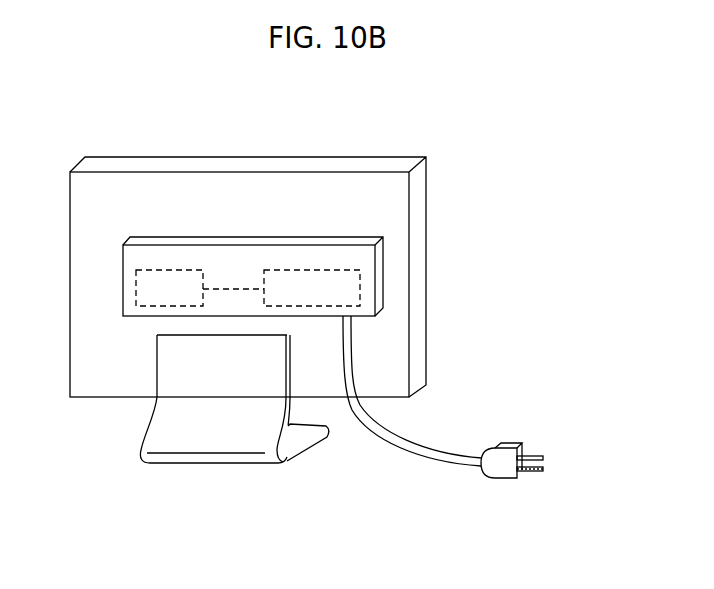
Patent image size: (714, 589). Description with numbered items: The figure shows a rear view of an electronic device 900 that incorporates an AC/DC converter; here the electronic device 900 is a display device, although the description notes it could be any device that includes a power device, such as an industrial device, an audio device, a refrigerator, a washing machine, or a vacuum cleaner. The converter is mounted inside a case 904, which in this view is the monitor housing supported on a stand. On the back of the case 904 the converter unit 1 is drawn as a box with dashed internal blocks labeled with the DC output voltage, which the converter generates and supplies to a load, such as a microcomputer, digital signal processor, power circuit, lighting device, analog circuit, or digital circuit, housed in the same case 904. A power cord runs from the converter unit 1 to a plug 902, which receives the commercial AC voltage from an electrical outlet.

The electronic device 900 is at (326, 319).
The case 904 is at (305, 190).
The power supply unit 1 is at (345, 290).
The plug 902 is at (493, 478).